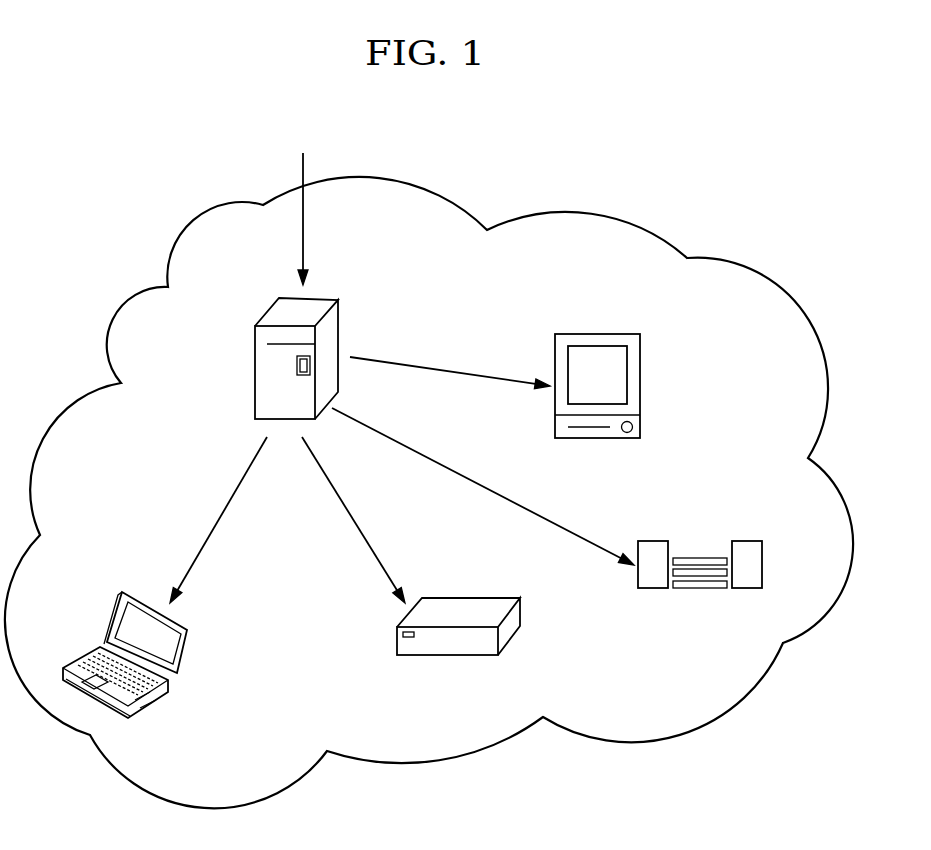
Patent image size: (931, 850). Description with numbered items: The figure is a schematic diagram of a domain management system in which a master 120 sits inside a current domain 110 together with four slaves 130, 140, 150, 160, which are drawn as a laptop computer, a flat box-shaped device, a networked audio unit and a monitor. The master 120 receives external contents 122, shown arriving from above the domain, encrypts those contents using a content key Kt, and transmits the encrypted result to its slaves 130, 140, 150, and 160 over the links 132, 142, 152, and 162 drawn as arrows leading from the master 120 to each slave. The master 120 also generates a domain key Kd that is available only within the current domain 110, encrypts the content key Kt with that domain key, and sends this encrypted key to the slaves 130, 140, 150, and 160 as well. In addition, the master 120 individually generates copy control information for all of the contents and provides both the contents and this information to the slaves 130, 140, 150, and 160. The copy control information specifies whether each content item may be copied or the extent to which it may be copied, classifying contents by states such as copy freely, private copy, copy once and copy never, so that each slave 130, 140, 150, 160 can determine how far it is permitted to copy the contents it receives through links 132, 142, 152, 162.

The current domain 110 is at (595, 213).
The master 120 is at (318, 292).
The external contents 122 is at (308, 236).
The slave 130 is at (148, 706).
The transmission path to laptop 132 is at (220, 523).
The slave 140 is at (475, 597).
The transmission path to set-top box 142 is at (352, 520).
The slave 150 is at (700, 541).
The transmission path to audio device 152 is at (485, 484).
The slave 160 is at (600, 333).
The transmission path to monitor 162 is at (452, 371).